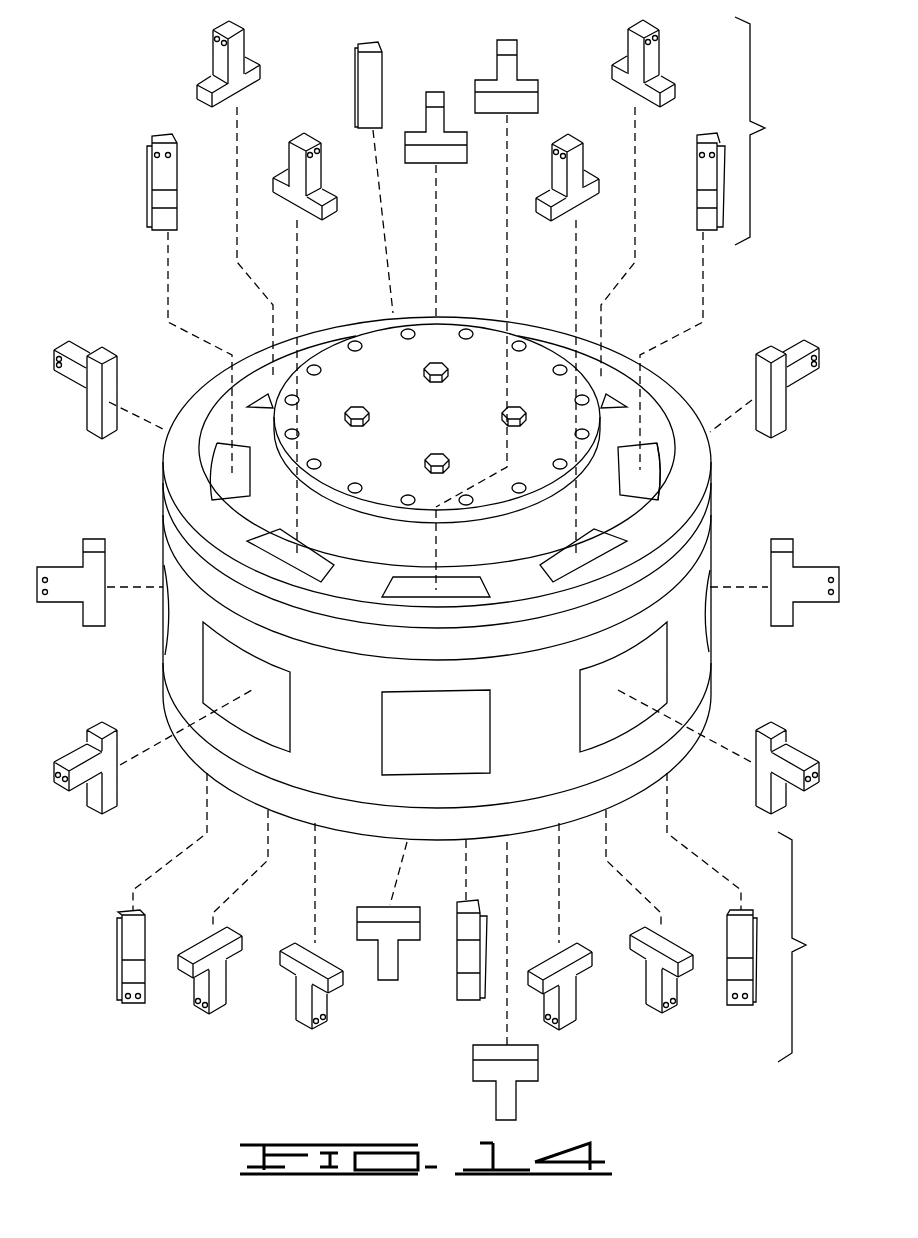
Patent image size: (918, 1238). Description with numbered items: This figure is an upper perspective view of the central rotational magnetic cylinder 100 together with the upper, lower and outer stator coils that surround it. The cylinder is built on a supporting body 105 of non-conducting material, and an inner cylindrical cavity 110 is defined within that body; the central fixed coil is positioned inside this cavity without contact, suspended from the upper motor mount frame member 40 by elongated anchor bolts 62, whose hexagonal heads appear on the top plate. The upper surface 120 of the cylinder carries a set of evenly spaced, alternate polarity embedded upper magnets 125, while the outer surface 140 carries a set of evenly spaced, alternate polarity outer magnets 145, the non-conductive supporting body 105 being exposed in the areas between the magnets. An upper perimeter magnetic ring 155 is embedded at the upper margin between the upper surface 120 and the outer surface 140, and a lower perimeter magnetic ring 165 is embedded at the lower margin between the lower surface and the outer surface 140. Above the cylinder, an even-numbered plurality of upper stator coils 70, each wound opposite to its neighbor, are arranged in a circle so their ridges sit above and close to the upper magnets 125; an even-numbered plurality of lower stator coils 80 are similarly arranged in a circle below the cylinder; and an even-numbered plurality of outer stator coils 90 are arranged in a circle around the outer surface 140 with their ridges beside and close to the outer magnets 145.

The upper motor mount frame member 40 is at (387, 350).
The elongated anchor bolts 62 is at (507, 408).
The upper stator coils 70 is at (765, 128).
The lower stator coils 80 is at (806, 944).
The outer stator coils 90 is at (368, 50).
The central rotational magnetic cylinder 100 is at (673, 393).
The supporting body 105 is at (556, 744).
The inner cylindrical cavity 110 is at (303, 508).
The upper surface 120 is at (668, 465).
The upper magnets 125 is at (658, 497).
The outer surface 140 is at (232, 742).
The outer magnets 145 is at (213, 688).
The upper perimeter magnetic ring 155 is at (665, 580).
The lower perimeter magnetic ring 165 is at (698, 708).